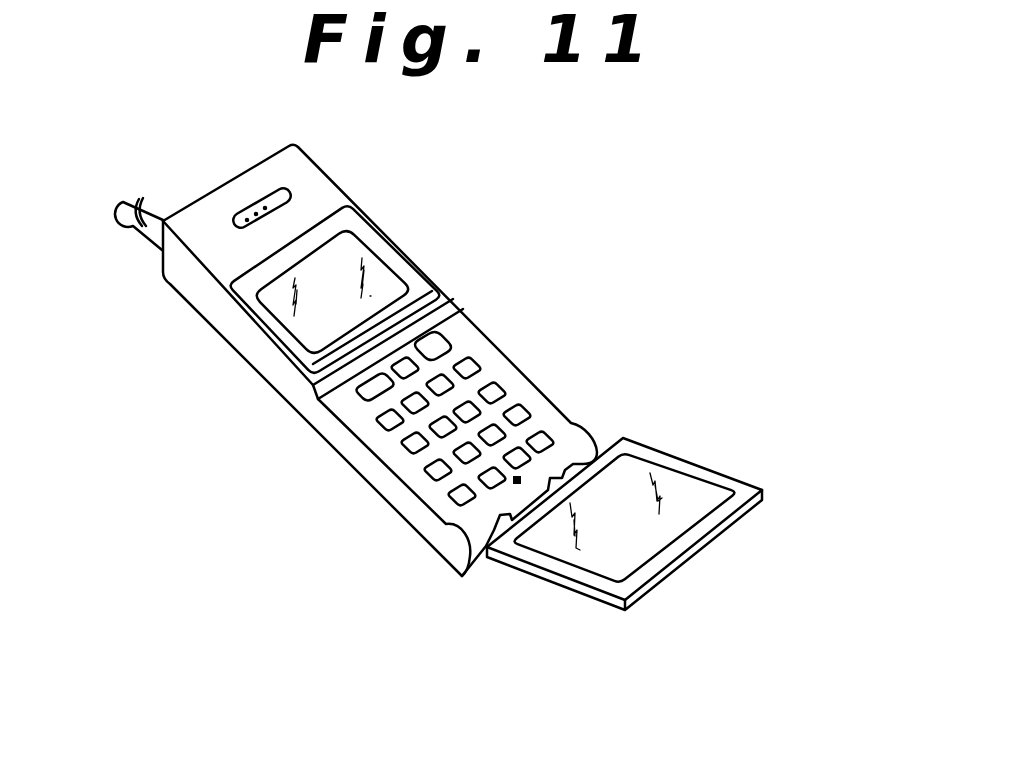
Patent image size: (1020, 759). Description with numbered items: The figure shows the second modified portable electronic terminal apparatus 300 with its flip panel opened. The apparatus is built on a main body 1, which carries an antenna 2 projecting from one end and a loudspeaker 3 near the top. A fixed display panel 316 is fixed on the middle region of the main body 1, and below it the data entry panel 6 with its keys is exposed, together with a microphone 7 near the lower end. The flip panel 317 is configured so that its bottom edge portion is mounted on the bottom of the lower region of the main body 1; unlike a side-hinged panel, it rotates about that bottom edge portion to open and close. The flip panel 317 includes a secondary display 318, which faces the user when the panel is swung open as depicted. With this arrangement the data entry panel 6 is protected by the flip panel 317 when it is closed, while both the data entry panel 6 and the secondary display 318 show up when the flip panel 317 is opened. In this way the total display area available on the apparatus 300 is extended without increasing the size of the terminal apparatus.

The second modified portable electronic terminal apparatus 300 is at (696, 286).
The main body 1 is at (270, 388).
The antenna 2 is at (136, 196).
The loudspeaker 3 is at (270, 196).
The fixed display panel 316 is at (382, 272).
The data entry panel 6 is at (503, 387).
The microphone 7 is at (513, 481).
The flip panel 317 is at (717, 473).
The secondary display 318 is at (617, 555).